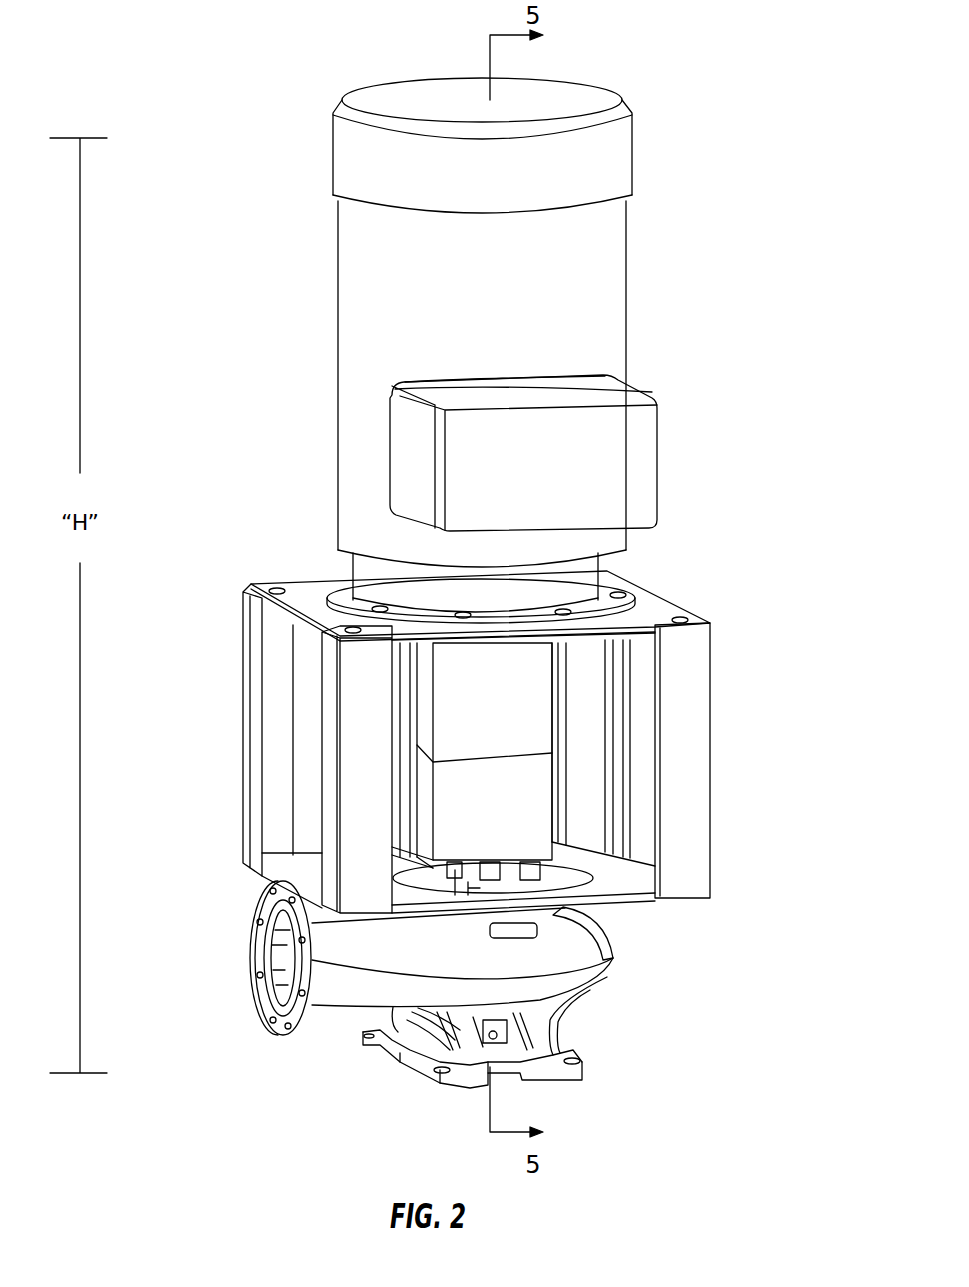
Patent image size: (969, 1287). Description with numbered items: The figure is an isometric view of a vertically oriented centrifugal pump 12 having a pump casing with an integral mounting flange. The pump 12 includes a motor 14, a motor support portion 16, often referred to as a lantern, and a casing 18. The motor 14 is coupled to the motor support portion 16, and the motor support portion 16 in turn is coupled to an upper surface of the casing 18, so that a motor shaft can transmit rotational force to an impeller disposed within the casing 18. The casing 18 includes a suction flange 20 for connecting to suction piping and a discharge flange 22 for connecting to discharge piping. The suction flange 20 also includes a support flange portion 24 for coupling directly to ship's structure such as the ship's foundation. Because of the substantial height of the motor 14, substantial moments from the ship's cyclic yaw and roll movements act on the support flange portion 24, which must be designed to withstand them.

The vertically oriented centrifugal pump 12 is at (796, 303).
The motor 14 is at (338, 343).
The motor support portion 16 is at (710, 768).
The casing 18 is at (620, 955).
The suction flange 20 is at (573, 1036).
The discharge flange 22 is at (288, 1033).
The support flange portion 24 is at (585, 1080).